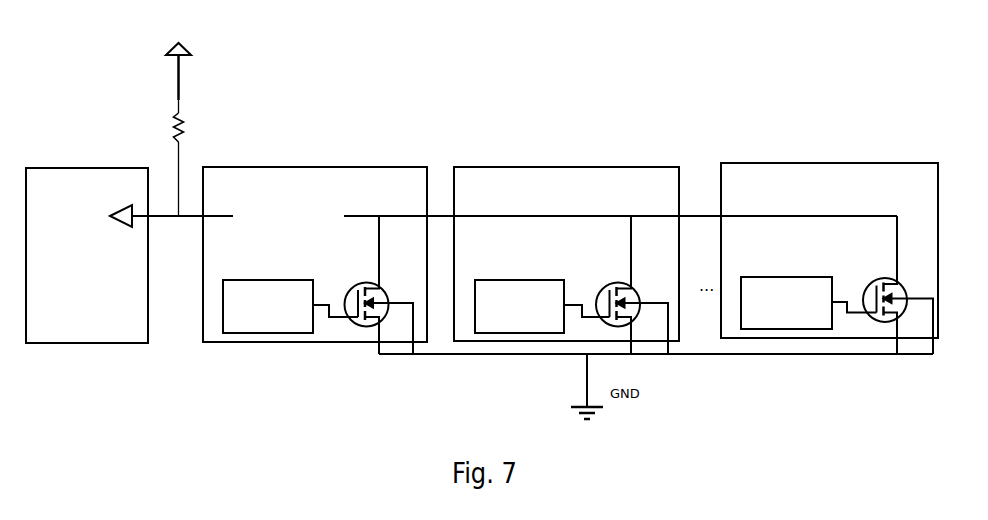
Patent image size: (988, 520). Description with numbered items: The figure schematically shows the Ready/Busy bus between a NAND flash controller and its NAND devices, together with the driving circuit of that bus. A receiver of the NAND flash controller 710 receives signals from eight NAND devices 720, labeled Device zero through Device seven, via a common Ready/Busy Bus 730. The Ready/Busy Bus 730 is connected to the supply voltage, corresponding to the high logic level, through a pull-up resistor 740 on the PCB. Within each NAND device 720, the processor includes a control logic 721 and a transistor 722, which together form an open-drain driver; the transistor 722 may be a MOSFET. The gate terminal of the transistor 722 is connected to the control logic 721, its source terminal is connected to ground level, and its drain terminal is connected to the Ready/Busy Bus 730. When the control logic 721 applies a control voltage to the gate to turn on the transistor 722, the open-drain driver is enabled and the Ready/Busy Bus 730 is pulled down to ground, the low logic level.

The NAND flash controller 710 is at (105, 168).
The NAND device 720 is at (343, 167).
The control logic 721 is at (262, 280).
The transistor 722 is at (382, 289).
The Ready/Busy Bus 730 is at (353, 216).
The pull-up resistor 740 is at (175, 121).